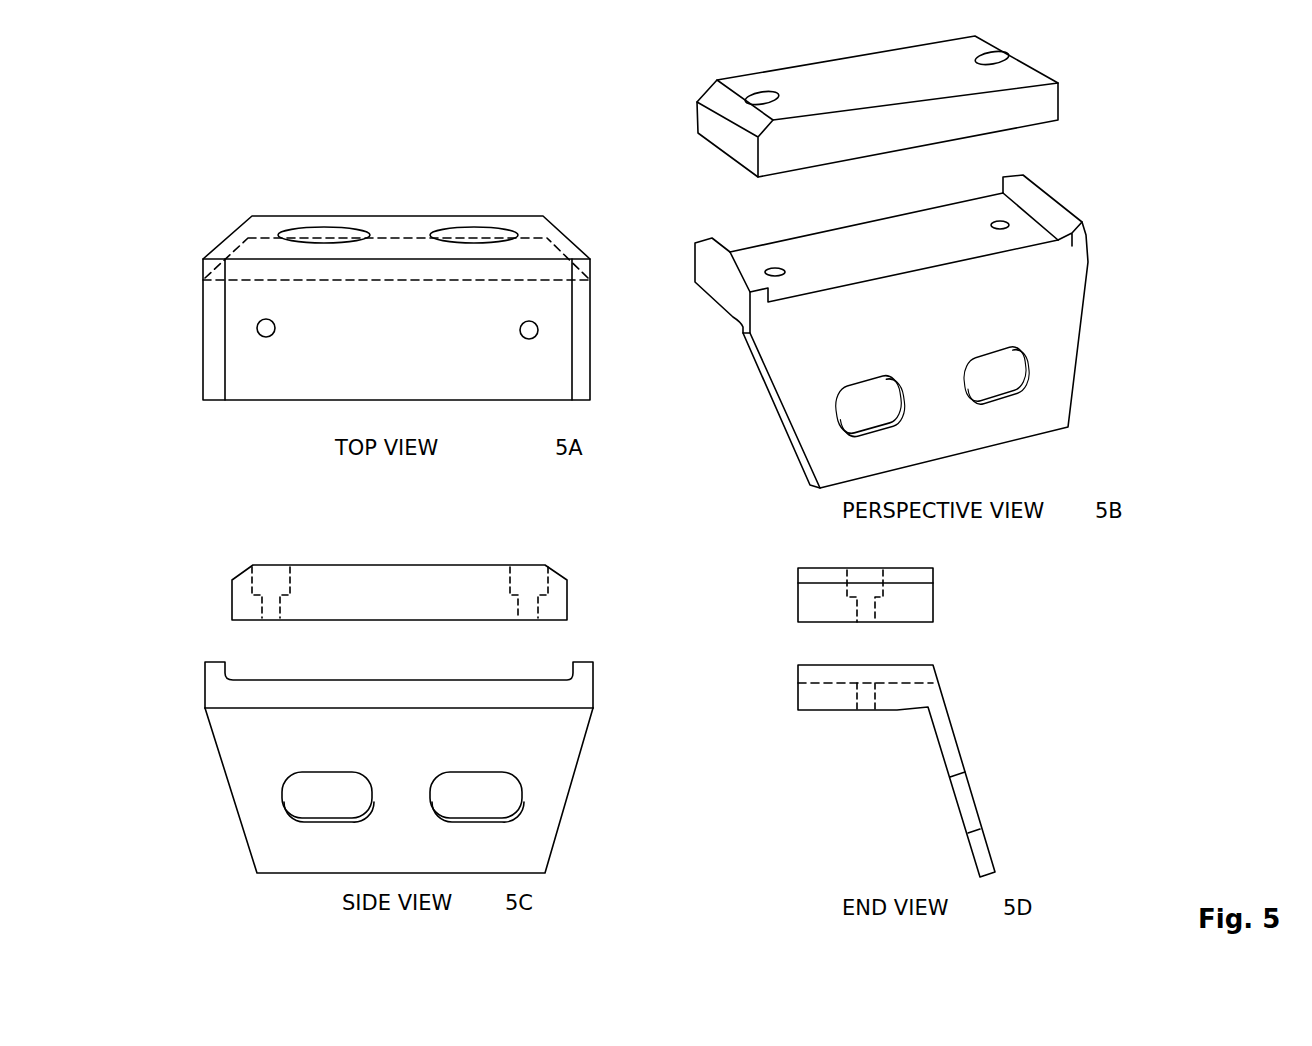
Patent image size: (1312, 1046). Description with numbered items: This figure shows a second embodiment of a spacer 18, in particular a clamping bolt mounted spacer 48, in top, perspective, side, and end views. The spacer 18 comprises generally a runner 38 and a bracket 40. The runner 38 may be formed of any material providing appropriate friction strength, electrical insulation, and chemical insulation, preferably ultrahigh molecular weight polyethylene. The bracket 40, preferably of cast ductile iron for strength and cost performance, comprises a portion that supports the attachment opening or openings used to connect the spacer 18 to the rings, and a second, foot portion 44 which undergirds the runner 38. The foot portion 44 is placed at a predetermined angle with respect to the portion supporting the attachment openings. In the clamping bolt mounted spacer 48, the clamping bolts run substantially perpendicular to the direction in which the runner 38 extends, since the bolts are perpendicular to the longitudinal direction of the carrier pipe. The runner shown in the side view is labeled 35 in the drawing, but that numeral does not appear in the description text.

The spacer 18 is at (1097, 376).
The block 35 is at (447, 563).
The runner 38 is at (877, 106).
The bracket 40 is at (585, 753).
The foot portion 44 is at (418, 677).
The clamping bolt mounted spacer 48 is at (1082, 436).